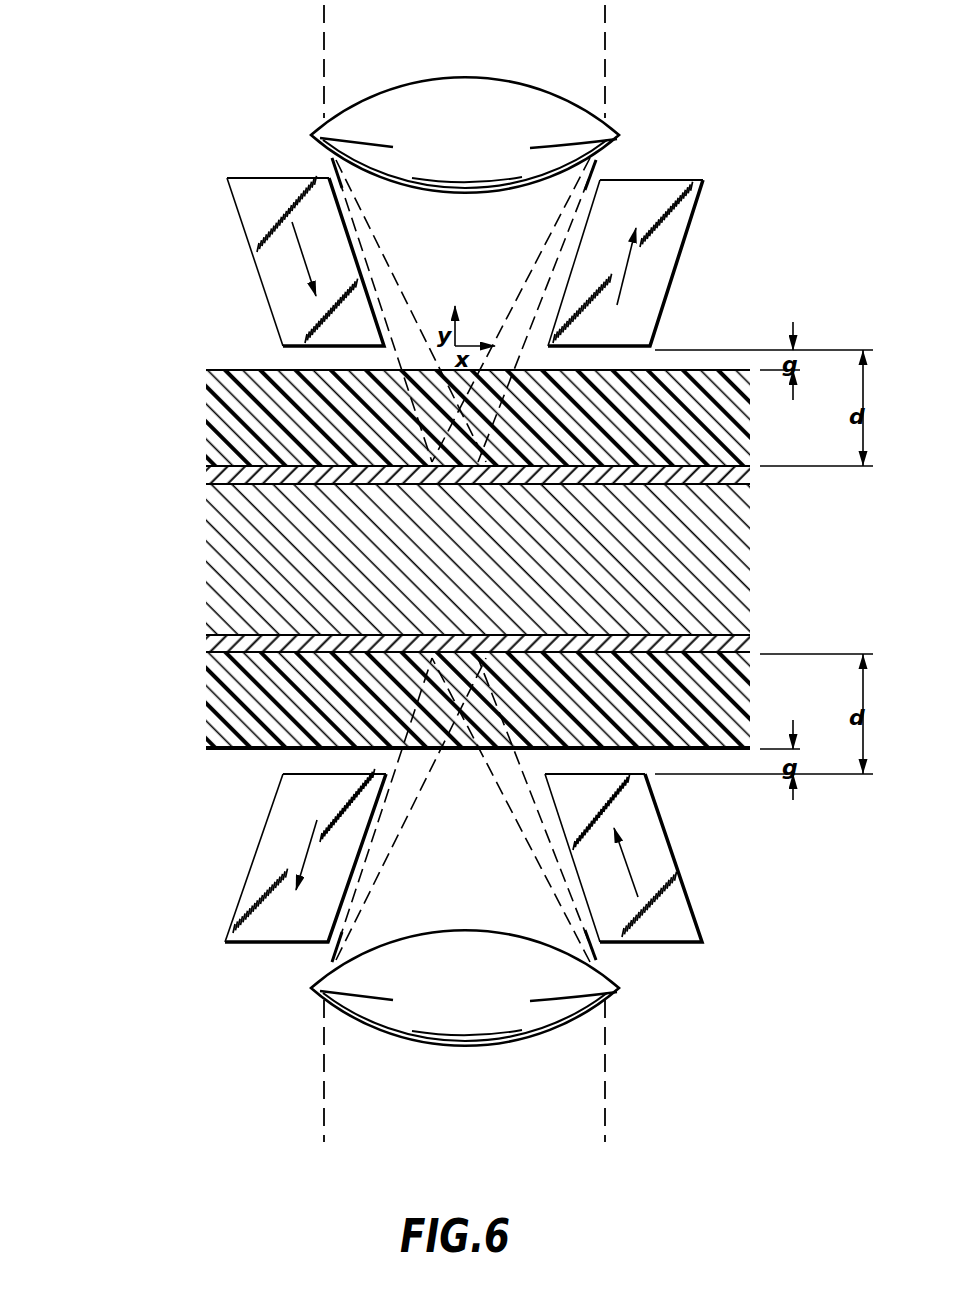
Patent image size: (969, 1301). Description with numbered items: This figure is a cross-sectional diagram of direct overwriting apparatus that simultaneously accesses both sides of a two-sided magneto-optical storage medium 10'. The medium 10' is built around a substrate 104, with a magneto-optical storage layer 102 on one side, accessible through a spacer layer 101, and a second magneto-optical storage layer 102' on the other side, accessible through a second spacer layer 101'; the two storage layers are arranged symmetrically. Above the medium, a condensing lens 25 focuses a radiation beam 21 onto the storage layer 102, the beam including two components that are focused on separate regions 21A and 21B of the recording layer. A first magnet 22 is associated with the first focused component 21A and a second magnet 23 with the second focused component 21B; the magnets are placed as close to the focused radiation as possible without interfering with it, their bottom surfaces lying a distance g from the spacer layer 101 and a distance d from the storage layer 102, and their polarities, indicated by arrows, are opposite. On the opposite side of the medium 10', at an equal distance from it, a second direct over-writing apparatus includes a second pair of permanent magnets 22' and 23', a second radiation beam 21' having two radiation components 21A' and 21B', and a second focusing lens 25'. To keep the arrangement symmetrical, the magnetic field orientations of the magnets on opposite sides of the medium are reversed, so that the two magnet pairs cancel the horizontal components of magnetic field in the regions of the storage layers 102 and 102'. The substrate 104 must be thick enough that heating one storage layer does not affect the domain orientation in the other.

The two-sided magneto-optical storage medium 10' is at (395, 559).
The radiation beam 21 is at (413, 61).
The first focused radiation beam component 21A is at (466, 311).
The second focused radiation beam component 21B is at (461, 310).
The first magnet 22 is at (666, 263).
The second magnet 23 is at (274, 261).
The condensing lens 25 is at (465, 111).
The spacer layer 101 is at (443, 418).
The magneto-optical storage layer 102 is at (437, 472).
The substrate 104 is at (206, 595).
The second magneto-optical storage layer 102' is at (436, 644).
The second spacer layer 101' is at (440, 700).
The second radiation beam 21' is at (413, 1071).
The first radiation component of second beam 21A' is at (466, 809).
The second radiation component of second beam 21B' is at (461, 810).
The second-pair permanent magnet 22' is at (668, 858).
The second-pair permanent magnet 23' is at (273, 855).
The second focusing lens 25' is at (465, 1013).